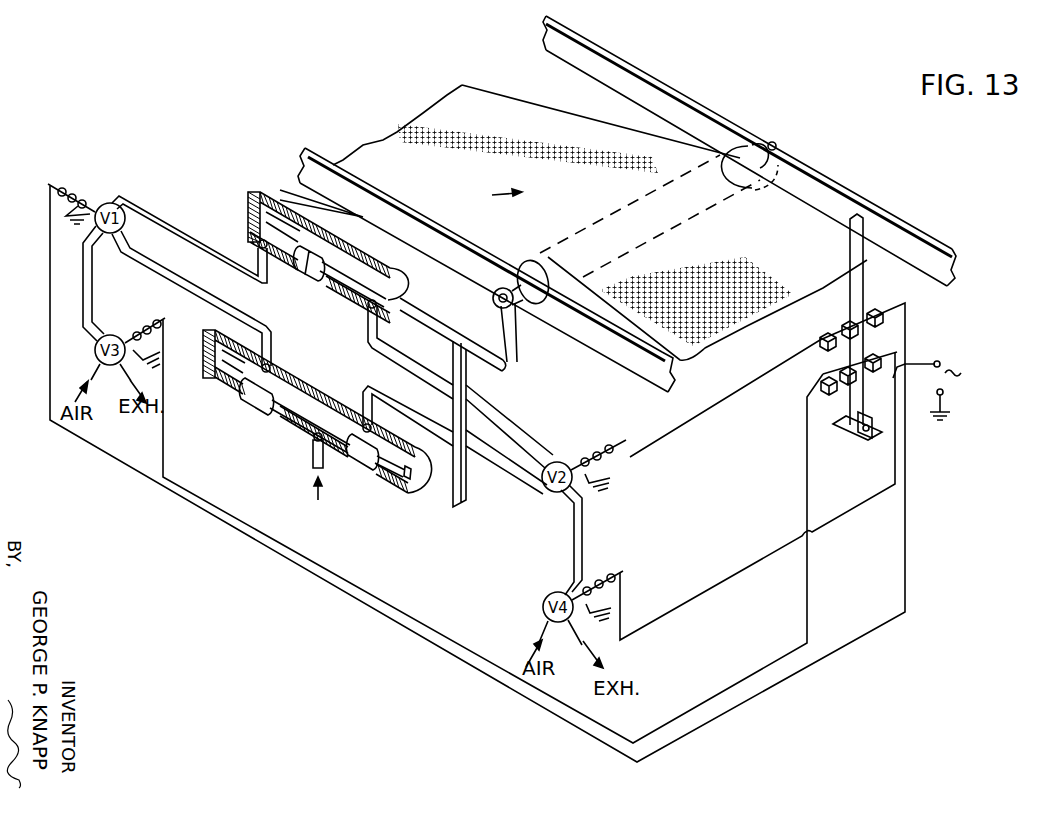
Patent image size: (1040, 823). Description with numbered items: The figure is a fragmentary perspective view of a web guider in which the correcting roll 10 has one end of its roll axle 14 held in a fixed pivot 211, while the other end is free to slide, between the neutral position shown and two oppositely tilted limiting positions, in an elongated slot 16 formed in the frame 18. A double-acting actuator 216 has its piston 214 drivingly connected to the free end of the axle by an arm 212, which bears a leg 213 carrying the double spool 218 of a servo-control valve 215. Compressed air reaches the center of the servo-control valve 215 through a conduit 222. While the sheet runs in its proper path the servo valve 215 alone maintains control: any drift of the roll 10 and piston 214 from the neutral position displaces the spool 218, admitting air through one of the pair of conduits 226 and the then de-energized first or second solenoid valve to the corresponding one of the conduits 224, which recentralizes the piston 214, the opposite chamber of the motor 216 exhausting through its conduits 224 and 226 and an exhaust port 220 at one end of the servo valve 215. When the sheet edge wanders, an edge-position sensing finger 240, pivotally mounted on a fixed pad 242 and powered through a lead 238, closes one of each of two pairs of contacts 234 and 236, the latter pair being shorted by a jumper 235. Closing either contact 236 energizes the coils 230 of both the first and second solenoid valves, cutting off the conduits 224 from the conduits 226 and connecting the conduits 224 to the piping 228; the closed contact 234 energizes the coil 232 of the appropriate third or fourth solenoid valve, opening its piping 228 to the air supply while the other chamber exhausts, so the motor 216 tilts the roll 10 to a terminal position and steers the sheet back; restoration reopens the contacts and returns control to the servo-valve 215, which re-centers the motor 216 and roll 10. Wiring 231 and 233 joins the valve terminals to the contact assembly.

The correcting roll 10 is at (747, 148).
The roll axle 14 is at (491, 298).
The elongated slot 16 is at (525, 328).
The frame 18 is at (845, 187).
The fixed pivot 211 is at (756, 220).
The arm 212 is at (502, 368).
The leg 213 is at (473, 500).
The piston 214 is at (302, 282).
The servo-control valve 215 is at (272, 420).
The double-acting actuator 216 is at (275, 185).
The double spool 218 is at (362, 464).
The exhaust port 220 is at (200, 352).
The conduit 222 is at (313, 456).
The conduits 224 is at (158, 204).
The conduits 226 is at (207, 298).
The piping 228 is at (91, 290).
The coils 230 is at (70, 186).
The wire 231 is at (52, 252).
The coil 232 is at (150, 322).
The wire 233 is at (164, 445).
The contacts 234 is at (826, 386).
The jumper 235 is at (897, 330).
The contacts 236 is at (825, 336).
The lead 238 is at (926, 366).
The edge-position sensing finger 240 is at (863, 277).
The fixed pad 242 is at (868, 440).